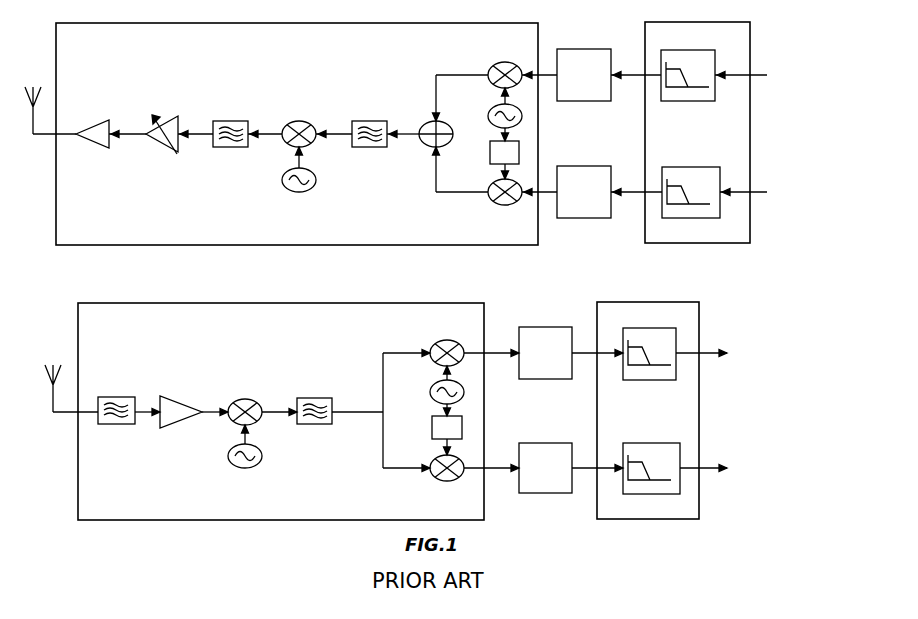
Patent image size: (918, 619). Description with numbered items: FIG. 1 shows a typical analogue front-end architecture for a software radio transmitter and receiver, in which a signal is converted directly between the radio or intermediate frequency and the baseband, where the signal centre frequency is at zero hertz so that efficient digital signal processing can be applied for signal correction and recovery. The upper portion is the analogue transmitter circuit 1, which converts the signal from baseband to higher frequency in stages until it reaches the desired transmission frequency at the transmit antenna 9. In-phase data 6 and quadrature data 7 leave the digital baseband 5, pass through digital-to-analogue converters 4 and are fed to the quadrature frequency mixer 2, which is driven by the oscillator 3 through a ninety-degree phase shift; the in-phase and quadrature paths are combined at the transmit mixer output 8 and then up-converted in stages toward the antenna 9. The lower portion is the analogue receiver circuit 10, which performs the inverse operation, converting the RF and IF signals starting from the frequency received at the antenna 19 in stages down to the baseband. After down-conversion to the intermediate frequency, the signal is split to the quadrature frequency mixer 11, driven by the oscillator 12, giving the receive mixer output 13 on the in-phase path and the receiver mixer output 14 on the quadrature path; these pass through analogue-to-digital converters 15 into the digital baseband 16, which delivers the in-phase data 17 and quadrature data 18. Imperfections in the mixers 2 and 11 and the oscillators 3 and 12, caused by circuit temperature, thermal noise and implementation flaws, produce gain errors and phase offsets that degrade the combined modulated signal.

The front-end radio transmitter 1 is at (297, 134).
The frequency mixer 2 is at (522, 65).
The oscillator 3 is at (512, 146).
The digital-to-analog converters 4 is at (609, 133).
The digital baseband (transmitter) 5 is at (697, 132).
The I-Data input 6 is at (765, 85).
The Q-Data input 7 is at (770, 202).
The transmit mixer output 8 is at (444, 133).
The transmit antenna 9 is at (44, 110).
The analogue receiver circuit 10 is at (281, 411).
The frequency mixer 11 is at (447, 343).
The oscillator 12 is at (434, 410).
The receive mixer output 13 is at (491, 363).
The receiver mixer output 14 is at (474, 473).
The analog-to-digital converters 15 is at (571, 410).
The digital baseband (receiver) 16 is at (648, 410).
The IF signal / I-Data output 17 is at (558, 408).
The Q-Data output 18 is at (733, 478).
The antenna 19 is at (68, 402).